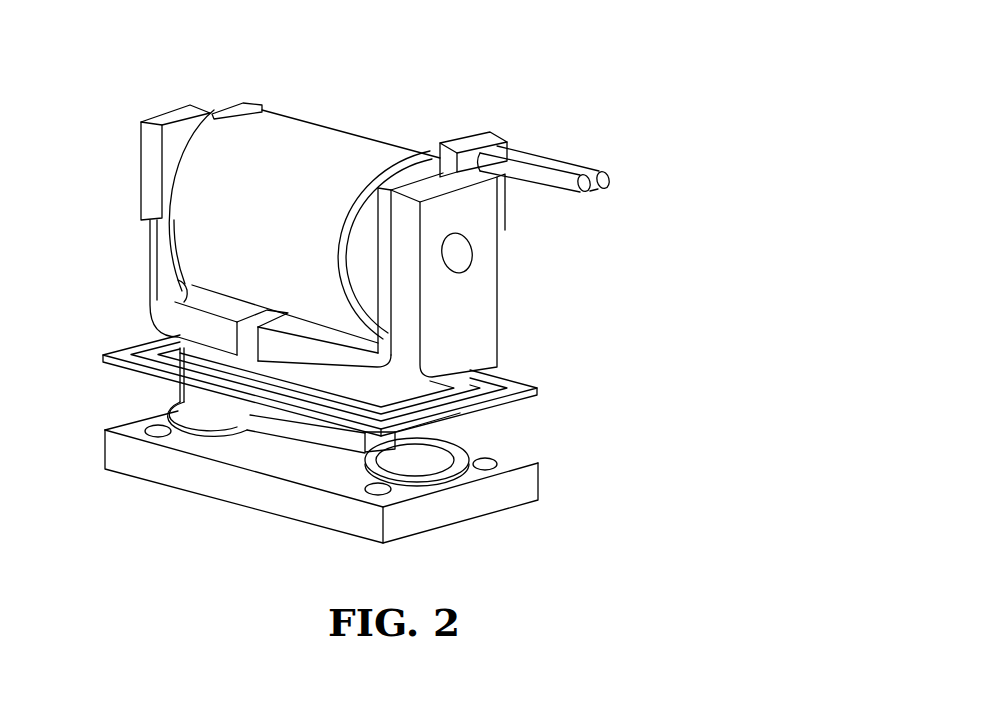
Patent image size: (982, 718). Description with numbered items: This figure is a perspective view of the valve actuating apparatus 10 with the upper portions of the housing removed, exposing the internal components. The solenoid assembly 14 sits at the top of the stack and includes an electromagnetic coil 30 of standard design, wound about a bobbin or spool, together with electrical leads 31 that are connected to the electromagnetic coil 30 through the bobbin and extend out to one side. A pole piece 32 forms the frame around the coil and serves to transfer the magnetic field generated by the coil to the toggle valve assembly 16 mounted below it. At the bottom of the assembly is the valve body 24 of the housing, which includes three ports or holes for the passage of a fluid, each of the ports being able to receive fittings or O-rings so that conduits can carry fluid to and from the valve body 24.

The valve actuating apparatus 10 is at (660, 124).
The solenoid assembly 14 is at (225, 100).
The toggle valve assembly 16 is at (527, 420).
The valve body 24 is at (538, 481).
The electromagnetic coil 30 is at (311, 144).
The electrical leads 31 is at (541, 170).
The pole piece 32 is at (508, 270).